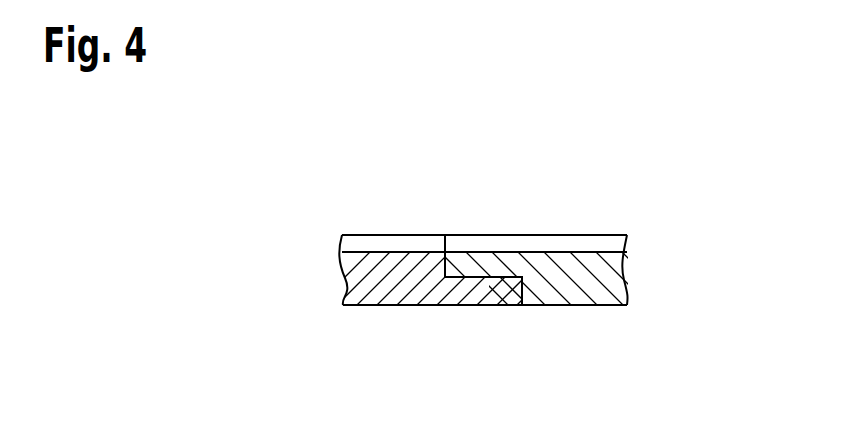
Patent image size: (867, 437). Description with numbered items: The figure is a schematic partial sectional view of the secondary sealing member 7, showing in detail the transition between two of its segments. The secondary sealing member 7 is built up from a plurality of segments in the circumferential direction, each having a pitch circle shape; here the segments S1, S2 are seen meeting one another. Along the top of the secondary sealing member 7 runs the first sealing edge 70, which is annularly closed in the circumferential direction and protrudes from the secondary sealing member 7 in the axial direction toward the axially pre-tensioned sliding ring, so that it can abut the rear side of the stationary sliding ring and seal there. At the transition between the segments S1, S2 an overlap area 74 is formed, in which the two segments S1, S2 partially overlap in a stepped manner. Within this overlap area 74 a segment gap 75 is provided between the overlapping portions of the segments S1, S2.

The secondary sealing member 7 is at (643, 200).
The first sealing edge 70 is at (517, 236).
The overlap area 74 is at (448, 228).
The segment gap 75 is at (490, 278).
The first segment S1 is at (396, 300).
The second segment S2 is at (585, 298).